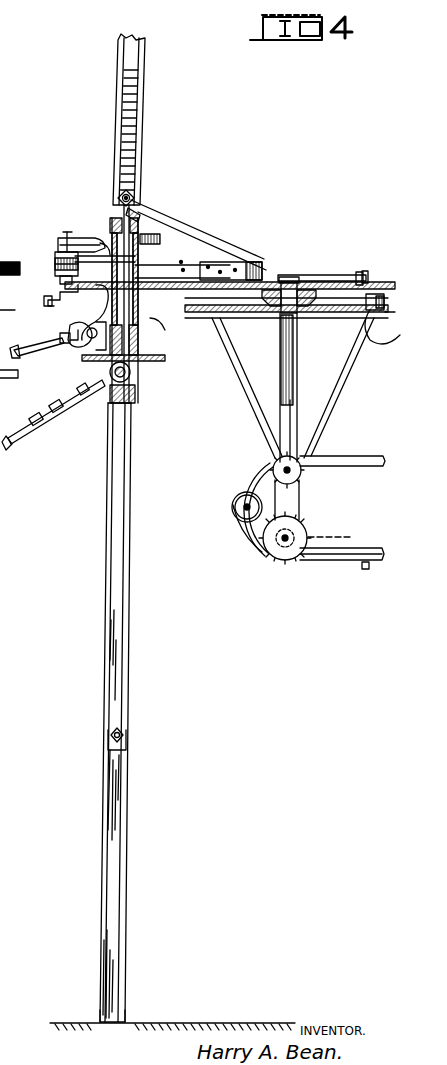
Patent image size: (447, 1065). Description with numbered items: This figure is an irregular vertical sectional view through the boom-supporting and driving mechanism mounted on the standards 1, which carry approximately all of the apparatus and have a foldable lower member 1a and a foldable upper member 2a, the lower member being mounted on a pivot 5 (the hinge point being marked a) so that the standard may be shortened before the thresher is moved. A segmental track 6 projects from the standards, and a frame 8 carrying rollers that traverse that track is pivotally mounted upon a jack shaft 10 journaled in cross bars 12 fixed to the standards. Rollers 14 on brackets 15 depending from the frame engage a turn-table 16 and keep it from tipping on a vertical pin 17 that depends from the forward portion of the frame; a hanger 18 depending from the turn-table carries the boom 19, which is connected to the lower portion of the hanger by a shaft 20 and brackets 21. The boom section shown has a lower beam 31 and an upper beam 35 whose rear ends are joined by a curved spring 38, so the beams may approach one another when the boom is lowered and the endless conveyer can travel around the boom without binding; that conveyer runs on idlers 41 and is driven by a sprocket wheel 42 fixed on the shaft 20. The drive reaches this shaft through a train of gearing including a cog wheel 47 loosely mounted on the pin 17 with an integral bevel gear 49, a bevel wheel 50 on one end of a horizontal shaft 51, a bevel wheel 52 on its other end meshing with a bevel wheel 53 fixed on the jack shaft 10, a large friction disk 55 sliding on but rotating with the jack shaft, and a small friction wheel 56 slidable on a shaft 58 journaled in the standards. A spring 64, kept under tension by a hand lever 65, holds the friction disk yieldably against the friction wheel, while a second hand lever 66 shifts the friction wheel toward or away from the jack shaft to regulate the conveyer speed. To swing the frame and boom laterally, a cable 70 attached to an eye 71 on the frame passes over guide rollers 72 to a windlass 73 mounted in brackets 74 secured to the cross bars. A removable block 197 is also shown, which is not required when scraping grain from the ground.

The standard 1 is at (119, 683).
The foldable lower member 1a is at (118, 863).
The foldable upper member 2a is at (130, 78).
The hinge a is at (112, 175).
The pivot 5 is at (121, 197).
The segmental track 6 is at (245, 262).
The frame 8 is at (382, 289).
The jack shaft 10 is at (132, 246).
The cross bar 12 is at (143, 219).
The roller 14 is at (384, 302).
The bracket 15 is at (378, 312).
The turn-table 16 is at (201, 308).
The vertical pin 17 is at (297, 335).
The hanger 18 is at (292, 391).
The boom 19 is at (302, 413).
The shaft 20 is at (283, 542).
The bracket 21 is at (341, 526).
The lower beam 31 is at (356, 562).
The upper beam 35 is at (373, 457).
The curved spring 38 is at (235, 472).
The idler 41 is at (268, 465).
The sprocket wheel 42 is at (262, 548).
The cog wheel 47 is at (272, 306).
The bevel gear 49 is at (300, 284).
The bevel wheel 50 is at (286, 277).
The horizontal shaft 51 is at (173, 332).
The bevel wheel 52 is at (136, 306).
The bevel wheel 53 is at (138, 316).
The friction disk 55 is at (165, 358).
The friction wheel 56 is at (133, 373).
The shaft 58 is at (135, 392).
The spring 64 is at (83, 347).
The hand lever 65 is at (40, 345).
The hand lever 66 is at (14, 444).
The cable 70 is at (358, 252).
The eye 71 is at (366, 276).
The guide roller 72 is at (44, 262).
The windlass 73 is at (53, 286).
The bracket 74 is at (85, 272).
The block 197 is at (367, 569).